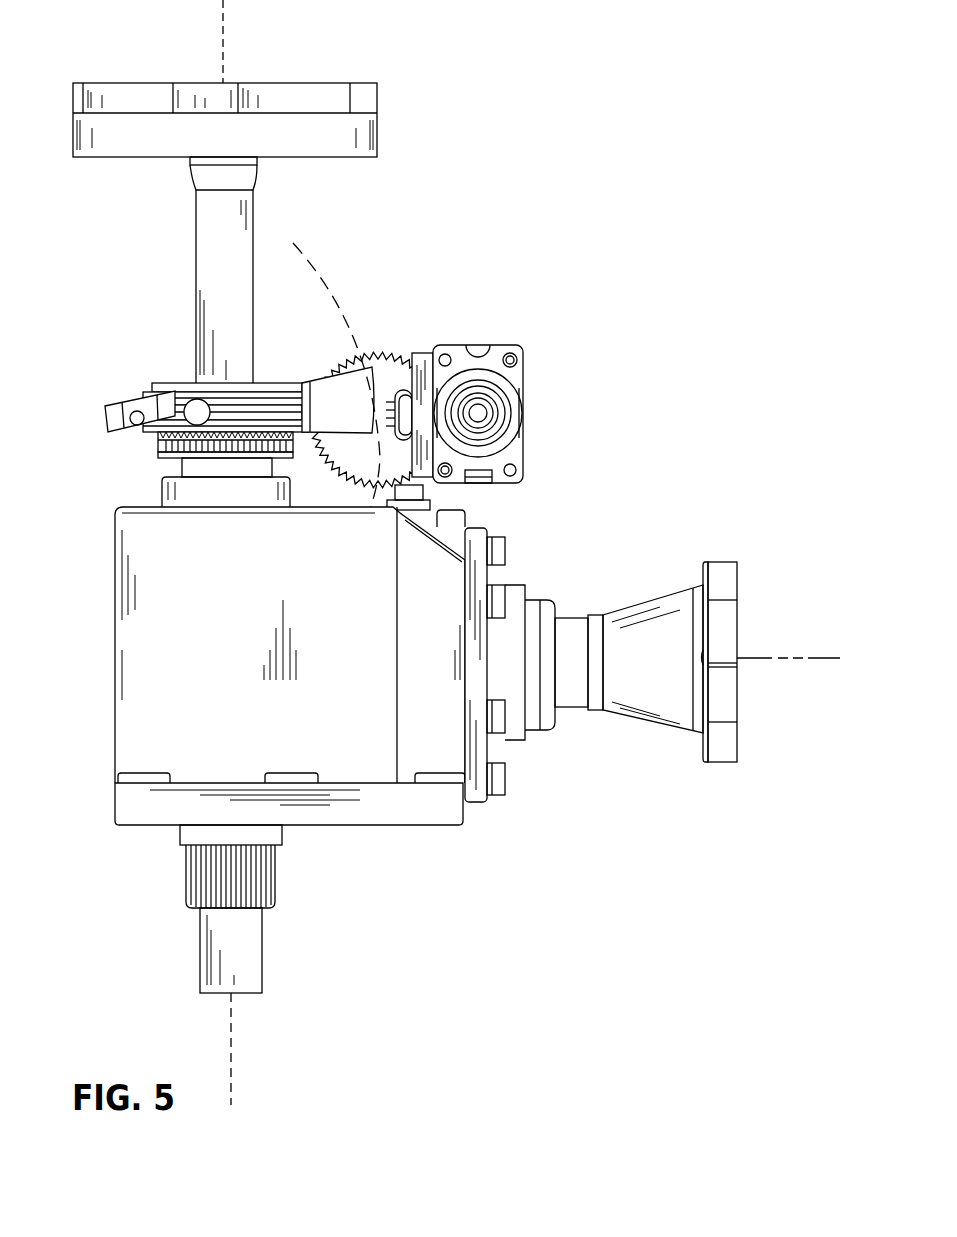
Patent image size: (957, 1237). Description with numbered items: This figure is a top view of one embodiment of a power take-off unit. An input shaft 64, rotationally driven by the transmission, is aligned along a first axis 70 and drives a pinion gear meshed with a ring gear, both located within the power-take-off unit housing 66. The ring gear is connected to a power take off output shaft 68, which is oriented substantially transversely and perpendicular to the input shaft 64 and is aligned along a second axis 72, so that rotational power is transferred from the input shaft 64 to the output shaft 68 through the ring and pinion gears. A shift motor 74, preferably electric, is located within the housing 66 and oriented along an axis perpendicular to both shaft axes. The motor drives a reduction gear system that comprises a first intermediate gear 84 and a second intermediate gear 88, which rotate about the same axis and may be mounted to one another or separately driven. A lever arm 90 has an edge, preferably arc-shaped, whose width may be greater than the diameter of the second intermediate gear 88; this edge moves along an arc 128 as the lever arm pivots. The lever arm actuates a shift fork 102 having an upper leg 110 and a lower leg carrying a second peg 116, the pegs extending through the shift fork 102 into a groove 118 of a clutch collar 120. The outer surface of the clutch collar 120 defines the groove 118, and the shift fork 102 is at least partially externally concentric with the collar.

The input shaft 64 is at (722, 562).
The power-take-off unit housing 66 is at (115, 650).
The power take off output shaft 68 is at (253, 195).
The first axis 70 is at (815, 657).
The second axis 72 is at (223, 14).
The shift motor 74 is at (501, 345).
The first intermediate gear 84 is at (398, 350).
The second intermediate gear 88 is at (357, 448).
The lever arm 90 is at (315, 378).
The shift fork 102 is at (105, 421).
The upper leg 110 is at (158, 445).
The second peg 116 is at (197, 405).
The groove 118 is at (263, 408).
The clutch collar 120 is at (160, 382).
The arc 128 is at (316, 258).